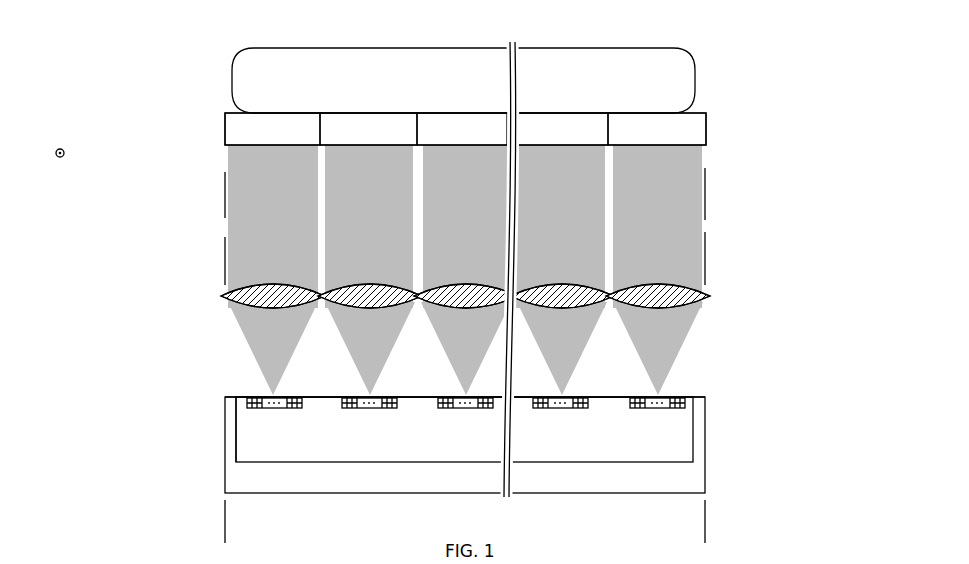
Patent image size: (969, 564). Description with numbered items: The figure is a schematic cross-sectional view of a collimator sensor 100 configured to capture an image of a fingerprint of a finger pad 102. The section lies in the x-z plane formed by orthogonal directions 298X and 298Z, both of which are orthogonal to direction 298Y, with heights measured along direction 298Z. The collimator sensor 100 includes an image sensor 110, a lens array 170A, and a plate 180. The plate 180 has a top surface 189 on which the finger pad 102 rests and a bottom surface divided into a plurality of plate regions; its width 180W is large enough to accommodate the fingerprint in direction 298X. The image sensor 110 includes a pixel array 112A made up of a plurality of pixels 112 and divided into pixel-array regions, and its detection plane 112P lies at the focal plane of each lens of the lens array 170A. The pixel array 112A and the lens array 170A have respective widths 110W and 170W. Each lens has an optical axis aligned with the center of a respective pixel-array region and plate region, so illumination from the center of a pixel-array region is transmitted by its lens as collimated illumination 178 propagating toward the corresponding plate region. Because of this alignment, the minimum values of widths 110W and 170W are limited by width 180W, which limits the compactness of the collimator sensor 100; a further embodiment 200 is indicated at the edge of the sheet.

The collimator sensor 100 is at (150, 58).
The finger pad 102 is at (502, 89).
The image sensor 110 is at (502, 486).
The width of pixel array 110W is at (702, 520).
The pixel 112 is at (245, 397).
The pixel array 112A is at (502, 455).
The detection plane 112P is at (699, 394).
The lens array 170A is at (201, 292).
The width of lens array 170W is at (702, 258).
The collimated illumination 178 is at (211, 219).
The plate 180 is at (202, 134).
The width of plate 180W is at (702, 195).
The top surface 189 is at (701, 106).
The fingerprint imaging system with light source 200 is at (128, 563).
The direction 298X is at (167, 153).
The direction 298Y is at (60, 148).
The direction 298Z is at (60, 158).